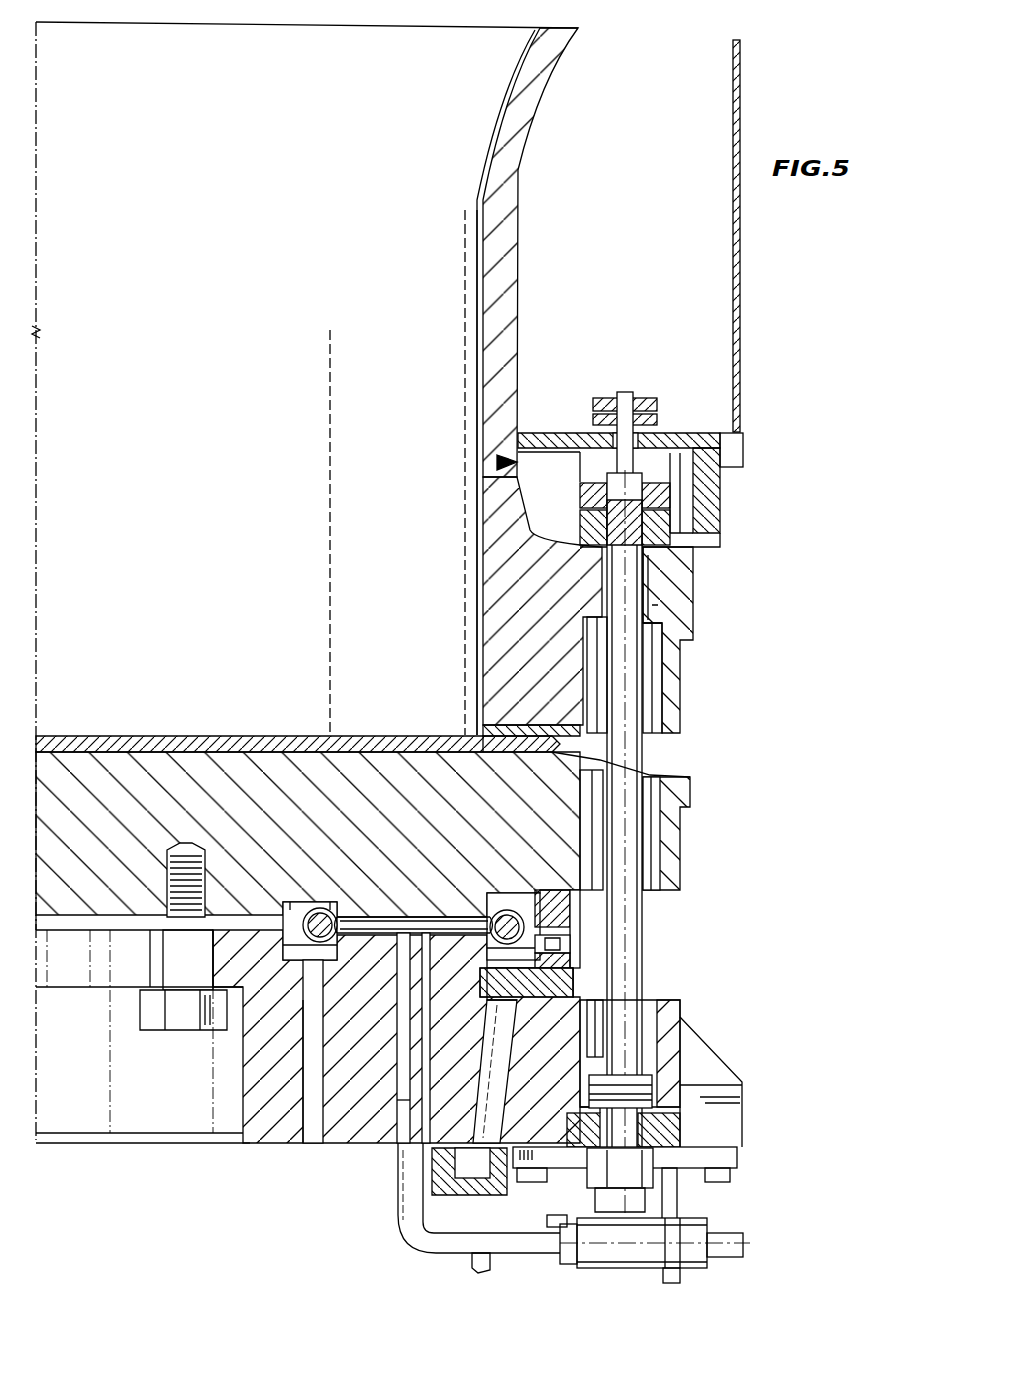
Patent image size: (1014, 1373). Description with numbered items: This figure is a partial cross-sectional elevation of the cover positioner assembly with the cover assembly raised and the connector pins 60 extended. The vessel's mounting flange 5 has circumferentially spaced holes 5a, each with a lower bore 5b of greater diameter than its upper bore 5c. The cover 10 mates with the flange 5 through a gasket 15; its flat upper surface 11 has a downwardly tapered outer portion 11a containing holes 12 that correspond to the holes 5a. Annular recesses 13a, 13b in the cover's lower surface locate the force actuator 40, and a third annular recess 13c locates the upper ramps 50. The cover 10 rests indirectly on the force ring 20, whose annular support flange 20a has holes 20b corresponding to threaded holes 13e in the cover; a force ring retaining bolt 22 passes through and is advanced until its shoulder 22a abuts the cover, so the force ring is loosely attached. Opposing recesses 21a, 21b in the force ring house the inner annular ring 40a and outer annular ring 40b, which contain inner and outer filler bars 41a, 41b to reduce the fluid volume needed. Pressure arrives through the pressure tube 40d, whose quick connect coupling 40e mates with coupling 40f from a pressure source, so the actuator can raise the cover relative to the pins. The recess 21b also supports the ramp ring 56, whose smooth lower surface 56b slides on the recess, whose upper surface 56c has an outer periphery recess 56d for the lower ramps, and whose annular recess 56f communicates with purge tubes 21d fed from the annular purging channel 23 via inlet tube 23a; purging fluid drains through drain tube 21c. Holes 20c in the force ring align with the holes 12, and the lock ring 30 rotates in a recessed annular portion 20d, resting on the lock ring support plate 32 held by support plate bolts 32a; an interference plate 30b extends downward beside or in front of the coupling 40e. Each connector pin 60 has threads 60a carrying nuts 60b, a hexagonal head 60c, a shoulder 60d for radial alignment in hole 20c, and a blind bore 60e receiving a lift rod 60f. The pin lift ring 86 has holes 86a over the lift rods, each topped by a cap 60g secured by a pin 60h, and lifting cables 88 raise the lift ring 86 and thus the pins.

The flange 5 is at (693, 588).
The holes 5a is at (650, 565).
The lower bore 5b is at (662, 673).
The upper bore 5c is at (652, 606).
The cover 10 is at (690, 822).
The upper surface 11 is at (278, 736).
The downwardly tapered outer portion 11a is at (660, 778).
The holes 12 is at (680, 856).
The annular recess 13a is at (290, 903).
The annular recess 13b is at (498, 893).
The third annular recess 13c is at (542, 890).
The threaded holes 13e is at (180, 845).
The gasket 15 is at (477, 736).
The force ring 20 is at (245, 1140).
The annular support flange 20a is at (150, 925).
The spaced holes 20b is at (210, 975).
The holes 20c is at (680, 1021).
The recessed annular portion 20d is at (580, 1110).
The annular recess 21a is at (322, 952).
The annular recess 21b is at (510, 1092).
The drain tube 21c is at (300, 1132).
The purge tubes 21d is at (400, 1112).
The force ring retaining bolt 22 is at (193, 952).
The shoulder 22a is at (160, 915).
The annular purging channel 23 is at (440, 1184).
The purging fluid inlet tube 23a is at (476, 1272).
The lock ring 30 is at (567, 1130).
The interference plate 30b is at (743, 1246).
The lock ring support plate 32 is at (580, 1168).
The support plate bolts 32a is at (730, 1176).
The force actuator 40 is at (318, 900).
The inner annular ring 40a is at (334, 915).
The outer annular ring 40b is at (490, 920).
The pressure tube 40d is at (315, 1100).
The quick connect coupling 40e is at (612, 1268).
The mating coupling 40f is at (706, 1268).
The inner filler bar 41a is at (315, 912).
The outer filler bar 41b is at (477, 913).
The upper ramps 50 is at (580, 922).
The ramp ring 56 is at (573, 992).
The lower surface 56b is at (587, 1060).
The upper surface 56c is at (570, 946).
The outer periphery recess 56d is at (570, 963).
The annular recess 56f is at (490, 1003).
The connector pins 60 is at (643, 748).
The threads 60a is at (670, 494).
The nuts 60b is at (670, 522).
The head 60c is at (655, 1190).
The shoulder 60d is at (652, 1090).
The longitudinal blind bore 60e is at (640, 463).
The lift rod 60f is at (625, 392).
The cap 60g is at (598, 398).
The pin 60h is at (652, 414).
The pin lift ring 86 is at (720, 436).
The holes 86a is at (640, 442).
The lift ring lifting cables 88 is at (740, 268).